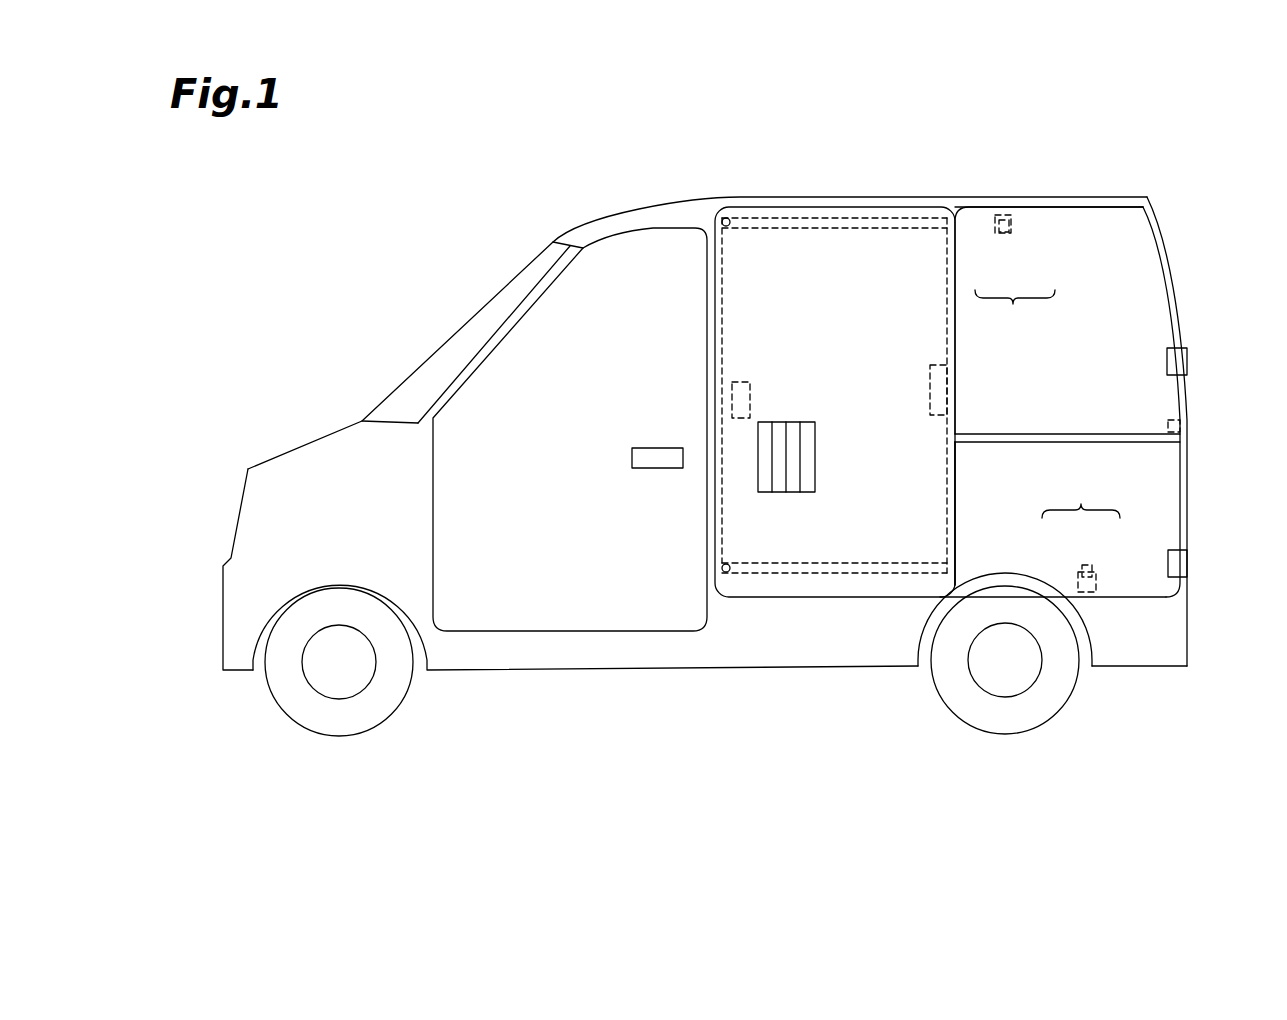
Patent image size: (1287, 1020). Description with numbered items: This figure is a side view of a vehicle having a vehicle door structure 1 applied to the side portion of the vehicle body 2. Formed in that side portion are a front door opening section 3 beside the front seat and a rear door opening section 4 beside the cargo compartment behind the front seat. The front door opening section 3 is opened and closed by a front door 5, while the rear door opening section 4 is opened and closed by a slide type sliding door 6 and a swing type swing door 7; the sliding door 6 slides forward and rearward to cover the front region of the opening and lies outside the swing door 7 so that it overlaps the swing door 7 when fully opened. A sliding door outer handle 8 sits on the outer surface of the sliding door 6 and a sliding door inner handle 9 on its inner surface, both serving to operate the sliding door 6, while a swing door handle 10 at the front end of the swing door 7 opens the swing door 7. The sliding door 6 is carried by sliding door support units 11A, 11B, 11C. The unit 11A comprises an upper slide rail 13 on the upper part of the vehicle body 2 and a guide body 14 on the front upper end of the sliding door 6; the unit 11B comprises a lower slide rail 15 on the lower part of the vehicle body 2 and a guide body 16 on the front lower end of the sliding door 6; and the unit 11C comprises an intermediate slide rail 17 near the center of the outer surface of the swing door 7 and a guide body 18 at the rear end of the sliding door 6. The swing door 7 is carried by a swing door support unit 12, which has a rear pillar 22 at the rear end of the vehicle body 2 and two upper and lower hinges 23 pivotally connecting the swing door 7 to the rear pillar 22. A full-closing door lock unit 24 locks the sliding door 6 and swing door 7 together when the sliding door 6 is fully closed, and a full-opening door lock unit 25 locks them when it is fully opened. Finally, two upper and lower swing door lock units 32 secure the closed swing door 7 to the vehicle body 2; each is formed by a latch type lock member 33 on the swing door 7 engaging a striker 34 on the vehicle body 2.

The vehicle door structure 1 is at (1017, 202).
The vehicle body 2 is at (688, 208).
The front door opening section 3 is at (652, 232).
The rear door opening section 4 is at (1096, 209).
The front door 5 is at (560, 595).
The sliding door 6 is at (848, 540).
The swing door 7 is at (1127, 494).
The sliding door outer handle 8 is at (820, 452).
The sliding door inner handle 9 is at (742, 388).
The swing door handle 10 is at (930, 382).
The sliding door support unit 11A is at (907, 212).
The sliding door support unit 11B is at (782, 578).
The sliding door support unit 11C is at (1028, 432).
The swing door support unit 12 is at (1187, 345).
The upper slide rail 13 is at (862, 216).
The guide body 14 is at (728, 205).
The lower slide rail 15 is at (873, 565).
The guide body 16 is at (729, 566).
The intermediate slide rail 17 is at (1068, 438).
The guide body 18 is at (958, 450).
The rear pillar 22 is at (1170, 272).
The hinge 23 is at (1182, 360).
The full-closing door lock unit 24 is at (945, 430).
The full-opening door lock unit 25 is at (1183, 430).
The swing door lock unit 32 is at (1047, 404).
The lock member 33 is at (1000, 232).
The striker 34 is at (1012, 220).